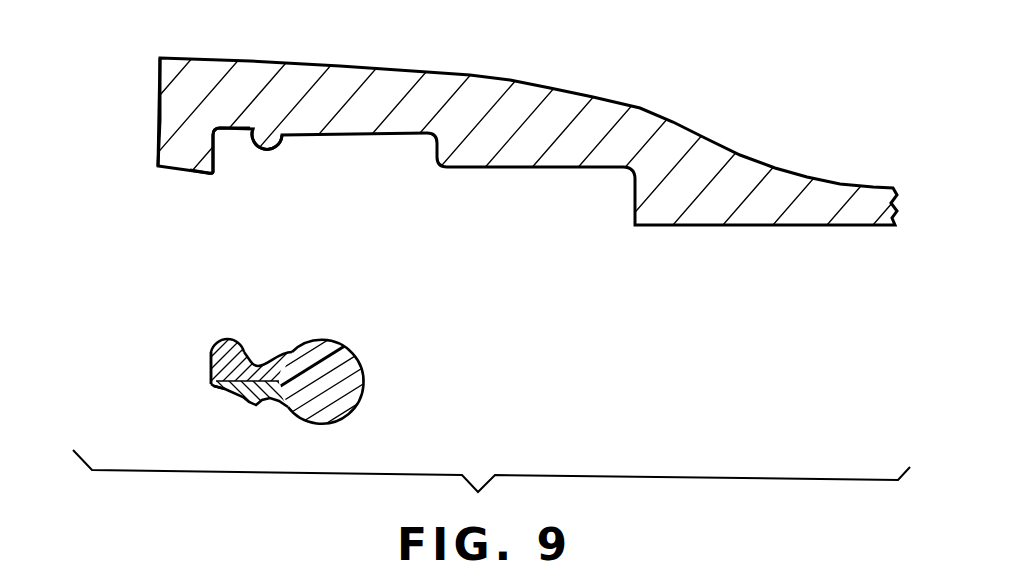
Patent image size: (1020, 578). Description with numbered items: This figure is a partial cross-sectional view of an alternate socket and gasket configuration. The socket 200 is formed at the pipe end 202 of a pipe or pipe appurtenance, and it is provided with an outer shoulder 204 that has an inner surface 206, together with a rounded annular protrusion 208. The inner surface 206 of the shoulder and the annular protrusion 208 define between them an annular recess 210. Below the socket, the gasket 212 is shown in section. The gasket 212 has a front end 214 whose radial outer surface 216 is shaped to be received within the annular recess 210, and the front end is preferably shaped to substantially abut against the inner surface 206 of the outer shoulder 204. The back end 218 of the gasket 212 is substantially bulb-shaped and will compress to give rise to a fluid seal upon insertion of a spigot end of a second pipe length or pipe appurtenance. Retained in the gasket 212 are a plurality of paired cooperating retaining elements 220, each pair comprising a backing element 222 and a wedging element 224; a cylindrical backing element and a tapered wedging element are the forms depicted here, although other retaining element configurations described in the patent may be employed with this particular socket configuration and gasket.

The socket 200 is at (550, 87).
The pipe end 202 is at (126, 88).
The outer shoulder 204 is at (167, 137).
The inner surface 206 is at (220, 173).
The rounded annular protrusion 208 is at (278, 146).
The annular recess 210 is at (228, 146).
The gasket 212 is at (300, 358).
The front end 214 is at (212, 352).
The radial outer surface 216 is at (228, 338).
The back end 218 is at (358, 397).
The paired cooperating retaining elements 220 is at (226, 406).
The backing element 222 is at (255, 343).
The wedging element 224 is at (270, 392).